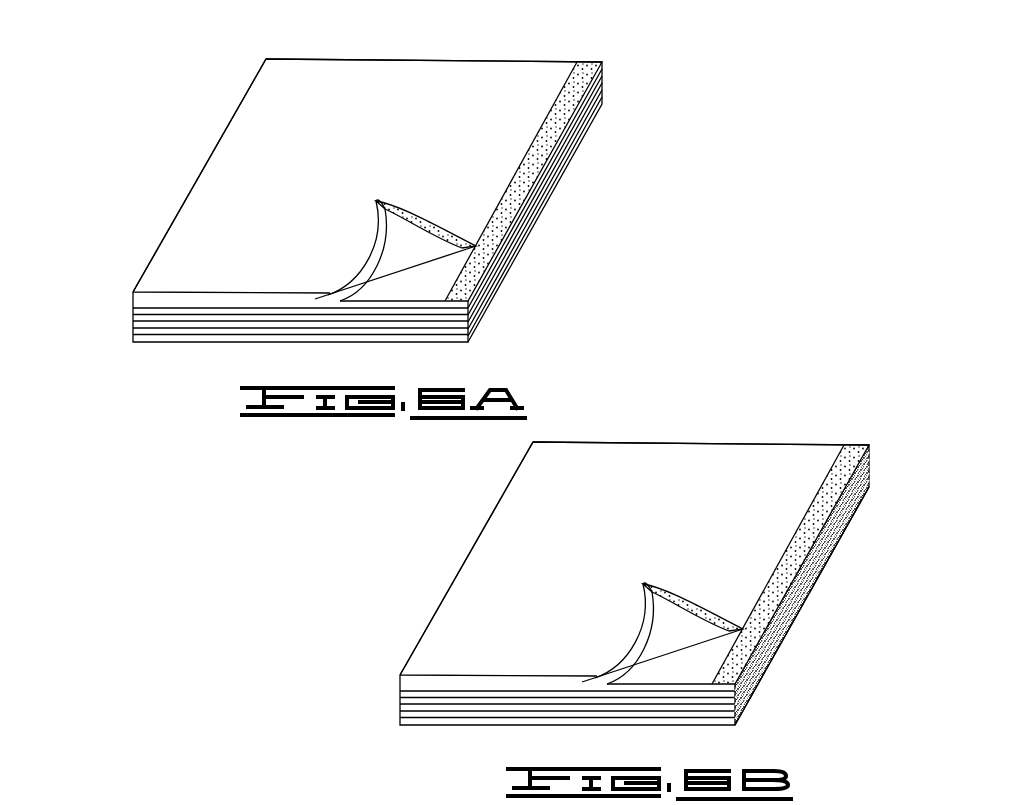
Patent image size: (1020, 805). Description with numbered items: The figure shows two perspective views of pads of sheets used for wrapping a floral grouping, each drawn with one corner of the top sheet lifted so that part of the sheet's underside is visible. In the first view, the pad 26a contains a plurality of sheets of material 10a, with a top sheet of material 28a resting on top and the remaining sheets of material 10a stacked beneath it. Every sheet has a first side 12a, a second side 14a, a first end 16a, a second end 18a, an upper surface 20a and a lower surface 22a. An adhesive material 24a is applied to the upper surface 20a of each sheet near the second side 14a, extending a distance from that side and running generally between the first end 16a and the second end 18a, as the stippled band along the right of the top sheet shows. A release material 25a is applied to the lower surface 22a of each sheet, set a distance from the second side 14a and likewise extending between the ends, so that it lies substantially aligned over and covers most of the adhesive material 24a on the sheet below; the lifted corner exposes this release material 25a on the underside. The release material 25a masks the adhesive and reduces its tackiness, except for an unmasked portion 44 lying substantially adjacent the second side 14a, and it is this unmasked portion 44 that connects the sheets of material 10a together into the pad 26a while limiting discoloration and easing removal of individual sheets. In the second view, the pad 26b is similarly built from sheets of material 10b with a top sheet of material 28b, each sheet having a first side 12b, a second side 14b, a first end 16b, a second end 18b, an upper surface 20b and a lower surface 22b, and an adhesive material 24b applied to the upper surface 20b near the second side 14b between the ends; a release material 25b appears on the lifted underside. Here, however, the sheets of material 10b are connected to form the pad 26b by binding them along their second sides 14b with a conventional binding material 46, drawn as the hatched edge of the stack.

In FIG. 6A, the sheets of material 10a is at (128, 313).
In FIG. 6A, the first side 12a is at (205, 165).
In FIG. 6A, the second side 14a is at (550, 152).
In FIG. 6A, the first end 16a is at (334, 59).
In FIG. 6A, the second end 18a is at (198, 297).
In FIG. 6A, the upper surface 20a is at (350, 135).
In FIG. 6A, the lower surface 22a is at (397, 247).
In FIG. 6A, the adhesive material 24a is at (563, 107).
In FIG. 6A, the release material 25a is at (435, 222).
In FIG. 6A, the pad 26a is at (613, 40).
In FIG. 6A, the top sheet of material 28a is at (405, 82).
In FIG. 6A, the unmasked portion of the adhesive 44 is at (388, 205).
In FIG. 6B, the sheets of material 10b is at (586, 583).
In FIG. 6B, the first side 12b is at (466, 558).
In FIG. 6B, the second side 14b is at (823, 585).
In FIG. 6B, the first end 16b is at (701, 415).
In FIG. 6B, the second end 18b is at (554, 718).
In FIG. 6B, the upper surface 20b is at (657, 587).
In FIG. 6B, the lower surface 22b is at (608, 633).
In FIG. 6B, the adhesive material 24b is at (790, 564).
In FIG. 6B, the adhesive strip on underside of lifted layer 25b is at (693, 584).
In FIG. 6B, the pad 26b is at (841, 403).
In FIG. 6B, the top sheet of material 28b is at (697, 423).
In FIG. 6B, the binding material 46 is at (803, 606).